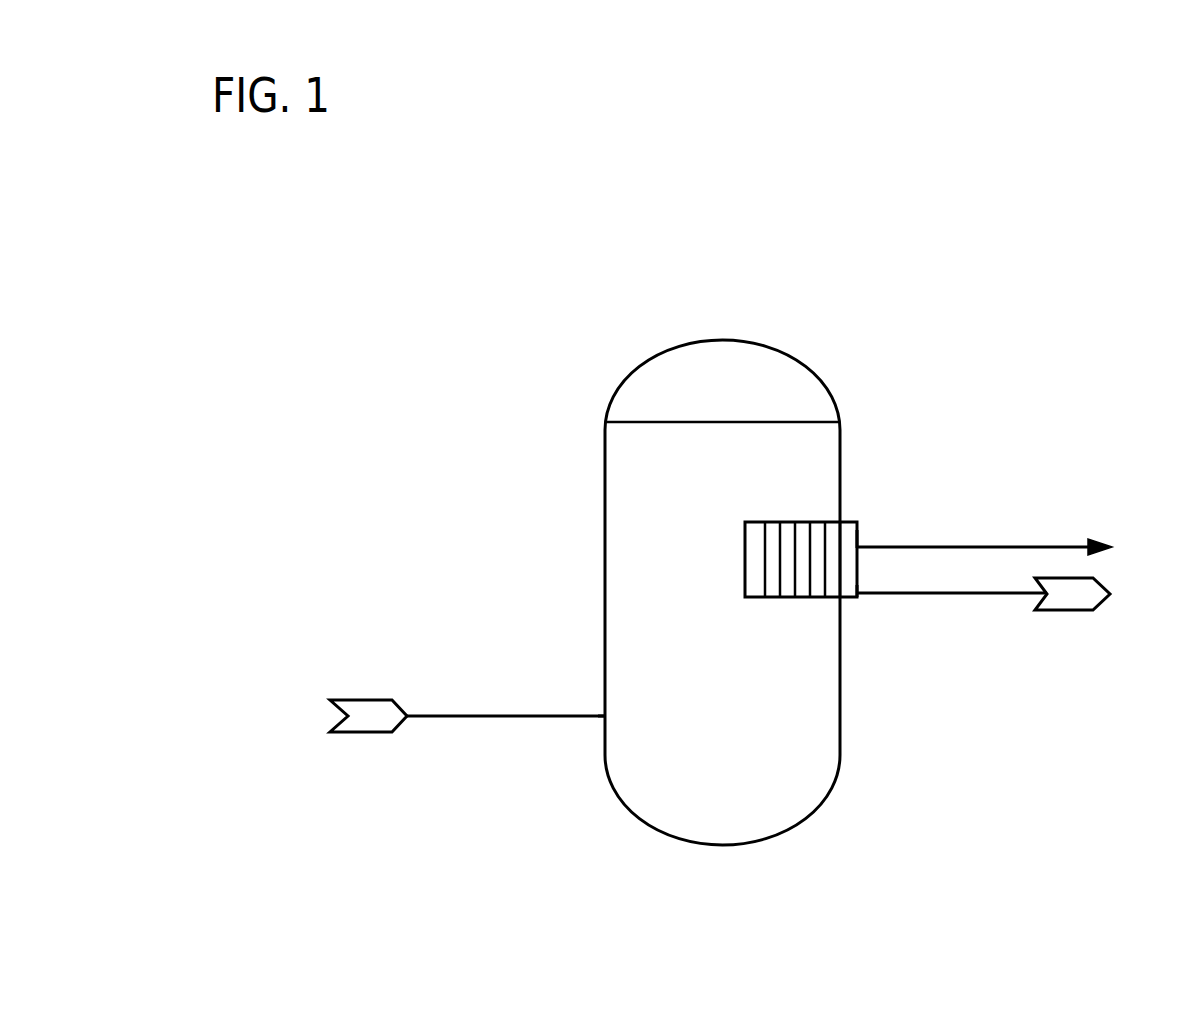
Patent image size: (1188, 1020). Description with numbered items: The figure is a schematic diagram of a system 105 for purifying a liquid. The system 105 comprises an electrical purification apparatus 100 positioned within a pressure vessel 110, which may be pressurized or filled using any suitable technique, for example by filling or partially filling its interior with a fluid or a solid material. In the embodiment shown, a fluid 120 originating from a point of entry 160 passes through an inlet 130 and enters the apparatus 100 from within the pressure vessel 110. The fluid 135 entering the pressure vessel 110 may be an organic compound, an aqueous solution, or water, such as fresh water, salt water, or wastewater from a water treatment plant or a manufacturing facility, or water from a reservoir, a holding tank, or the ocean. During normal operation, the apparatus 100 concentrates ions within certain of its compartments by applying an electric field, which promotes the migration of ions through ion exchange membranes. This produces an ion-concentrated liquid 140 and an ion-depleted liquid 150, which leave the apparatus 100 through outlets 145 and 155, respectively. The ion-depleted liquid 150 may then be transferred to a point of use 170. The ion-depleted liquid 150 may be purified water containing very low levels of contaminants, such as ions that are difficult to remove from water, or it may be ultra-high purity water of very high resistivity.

The system 105 is at (1041, 296).
The pressure vessel 110 is at (784, 350).
The fluid 120 is at (756, 737).
The electrical purification apparatus 100 is at (800, 597).
The outlet 145 is at (857, 541).
The outlet 155 is at (857, 597).
The ion-concentrated liquid 140 is at (990, 547).
The ion-depleted liquid 150 is at (987, 594).
The point of use 170 is at (1093, 611).
The point of entry 160 is at (378, 700).
The fluid 135 is at (483, 716).
The inlet 130 is at (604, 728).